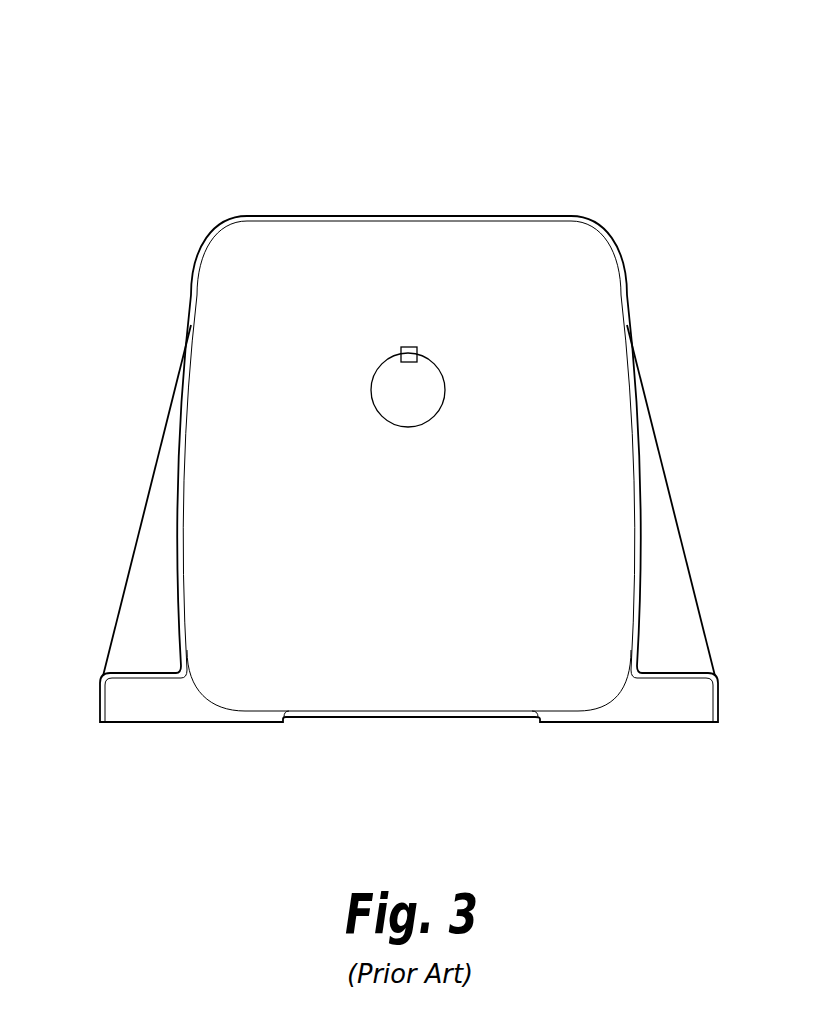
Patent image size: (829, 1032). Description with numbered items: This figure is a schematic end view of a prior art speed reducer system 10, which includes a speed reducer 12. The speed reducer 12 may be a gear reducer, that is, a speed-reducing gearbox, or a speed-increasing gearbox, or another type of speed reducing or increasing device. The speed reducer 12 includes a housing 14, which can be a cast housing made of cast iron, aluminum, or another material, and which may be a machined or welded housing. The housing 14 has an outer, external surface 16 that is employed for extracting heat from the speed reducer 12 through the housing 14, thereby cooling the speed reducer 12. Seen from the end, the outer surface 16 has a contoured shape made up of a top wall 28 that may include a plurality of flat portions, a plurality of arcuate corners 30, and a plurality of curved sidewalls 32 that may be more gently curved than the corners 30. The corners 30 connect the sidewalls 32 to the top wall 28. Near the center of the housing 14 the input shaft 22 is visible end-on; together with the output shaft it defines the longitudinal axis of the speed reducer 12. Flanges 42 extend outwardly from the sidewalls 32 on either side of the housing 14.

The speed reducer system 10 is at (615, 108).
The speed reducer 12 is at (423, 583).
The housing 14 is at (349, 139).
The outer surface 16 is at (189, 294).
The input shaft 22 is at (373, 383).
The top wall 28 is at (404, 215).
The arcuate corners 30 is at (208, 228).
The curved sidewalls 32 is at (178, 607).
The flanges 42 is at (138, 530).